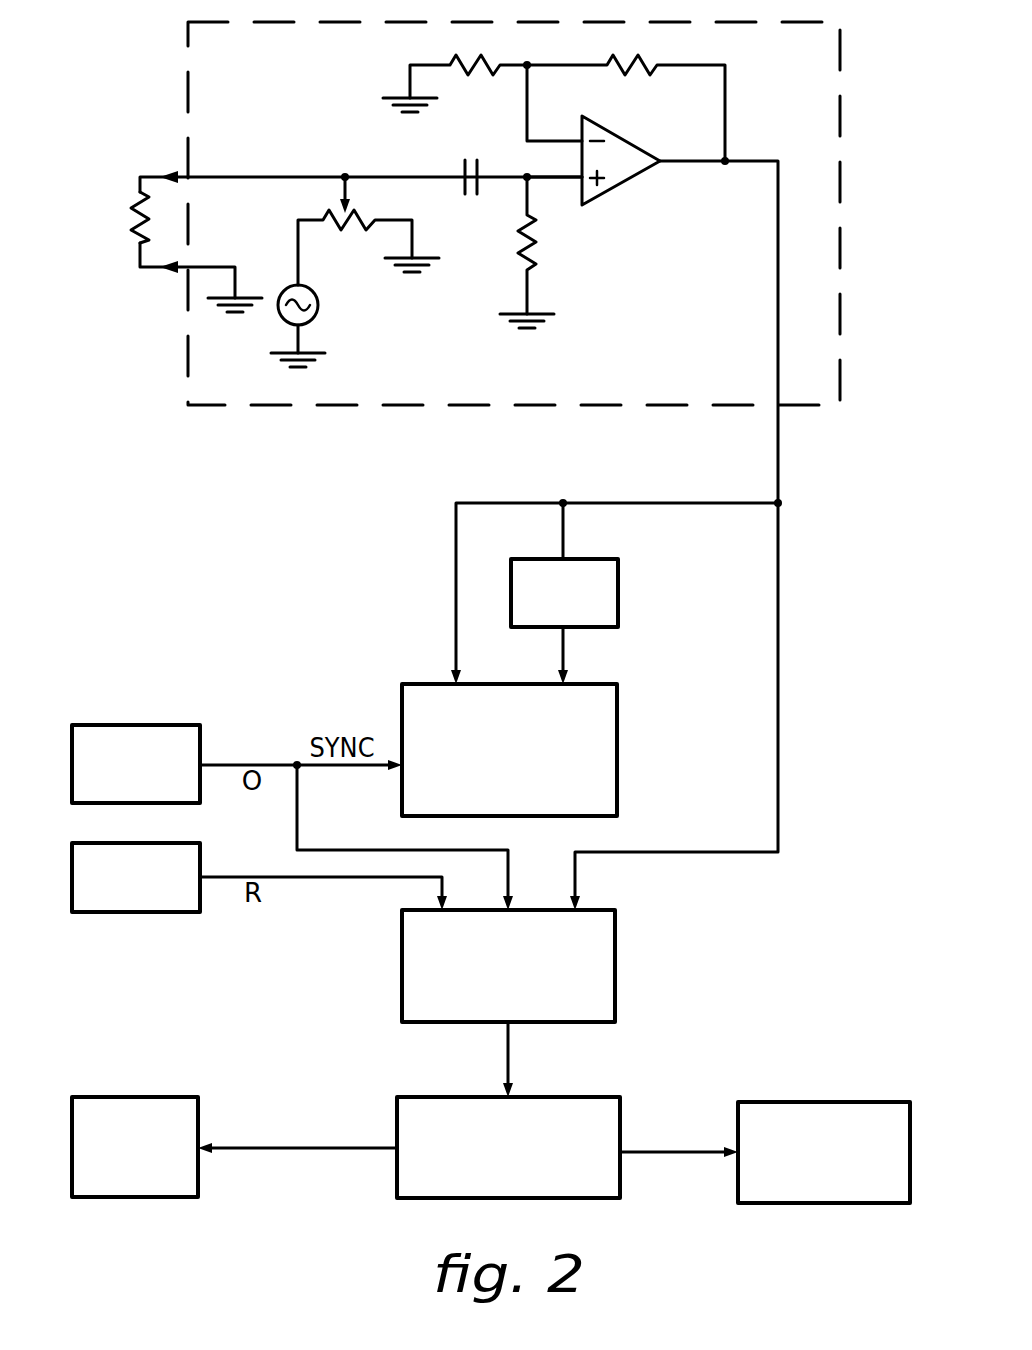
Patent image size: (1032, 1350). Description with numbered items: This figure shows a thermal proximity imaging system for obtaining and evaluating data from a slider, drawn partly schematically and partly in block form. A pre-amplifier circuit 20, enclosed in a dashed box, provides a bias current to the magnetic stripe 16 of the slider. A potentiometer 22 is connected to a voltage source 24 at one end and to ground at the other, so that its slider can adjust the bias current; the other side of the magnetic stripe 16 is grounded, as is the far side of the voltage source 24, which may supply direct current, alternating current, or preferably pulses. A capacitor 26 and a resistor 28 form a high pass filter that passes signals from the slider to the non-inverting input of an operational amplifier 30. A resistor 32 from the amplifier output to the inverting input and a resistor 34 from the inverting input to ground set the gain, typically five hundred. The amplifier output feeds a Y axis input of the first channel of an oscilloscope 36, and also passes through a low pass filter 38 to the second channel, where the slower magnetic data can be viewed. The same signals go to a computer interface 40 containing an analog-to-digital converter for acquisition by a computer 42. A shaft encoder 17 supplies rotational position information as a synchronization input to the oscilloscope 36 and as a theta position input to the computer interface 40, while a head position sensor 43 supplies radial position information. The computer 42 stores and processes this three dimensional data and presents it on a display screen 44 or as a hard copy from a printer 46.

The magnetic stripe 16 is at (135, 222).
The shaft encoder 17 is at (130, 725).
The pre-amplifier circuit 20 is at (842, 105).
The potentiometer 22 is at (356, 216).
The voltage source 24 is at (319, 305).
The capacitor 26 is at (478, 195).
The resistor 28 is at (536, 240).
The operational amplifier 30 is at (612, 190).
The resistor 32 is at (632, 62).
The resistor 34 is at (466, 62).
The oscilloscope 36 is at (617, 775).
The low pass filter 38 is at (618, 592).
The computer interface 40 is at (615, 958).
The computer 42 is at (572, 1097).
The head position sensor 43 is at (137, 912).
The display screen 44 is at (806, 1102).
The printer 46 is at (148, 1097).